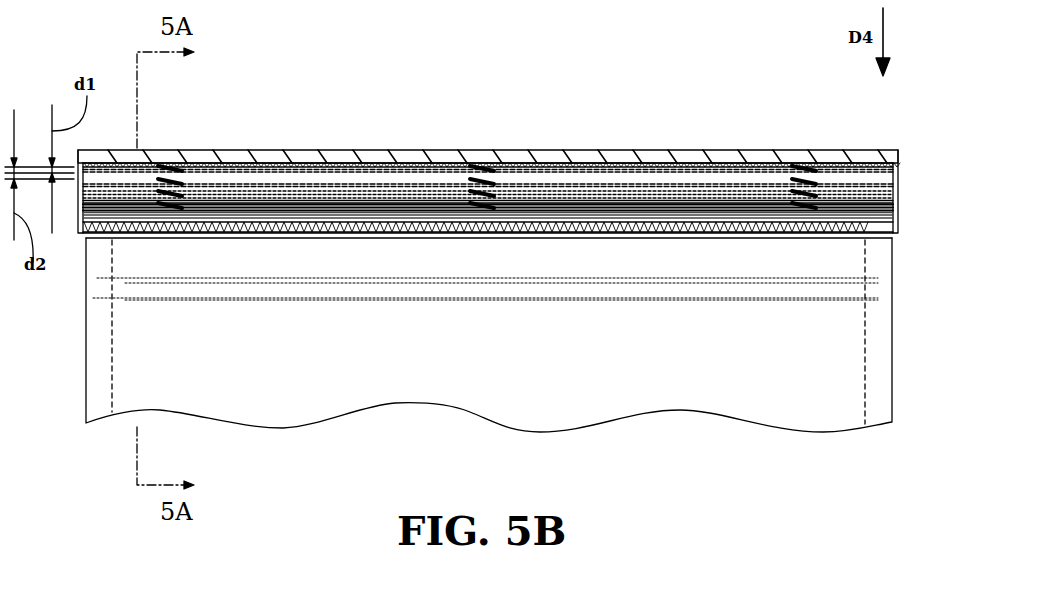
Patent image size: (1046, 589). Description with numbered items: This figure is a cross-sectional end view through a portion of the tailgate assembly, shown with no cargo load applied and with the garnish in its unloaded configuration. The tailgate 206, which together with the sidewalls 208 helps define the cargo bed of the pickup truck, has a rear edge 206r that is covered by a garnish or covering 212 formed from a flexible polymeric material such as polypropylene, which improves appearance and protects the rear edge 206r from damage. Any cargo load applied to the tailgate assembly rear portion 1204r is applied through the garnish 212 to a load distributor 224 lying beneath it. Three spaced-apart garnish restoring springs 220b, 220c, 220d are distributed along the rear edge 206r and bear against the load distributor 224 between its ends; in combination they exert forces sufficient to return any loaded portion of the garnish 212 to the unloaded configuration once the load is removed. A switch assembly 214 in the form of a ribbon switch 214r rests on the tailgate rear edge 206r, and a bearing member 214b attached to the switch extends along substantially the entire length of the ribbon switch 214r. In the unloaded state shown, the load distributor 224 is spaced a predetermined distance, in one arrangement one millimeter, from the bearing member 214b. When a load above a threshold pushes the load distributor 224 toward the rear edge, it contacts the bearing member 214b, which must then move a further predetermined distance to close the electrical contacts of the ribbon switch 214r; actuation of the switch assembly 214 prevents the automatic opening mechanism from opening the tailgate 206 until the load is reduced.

The tailgate 206 is at (372, 392).
The tailgate rear edge 206r is at (295, 212).
The sidewalls 208 is at (93, 318).
The garnish 212 is at (247, 150).
The switch assembly 214 is at (613, 213).
The bearing member 214b is at (440, 186).
The ribbon switch 214r is at (643, 200).
The spring 220b is at (178, 195).
The spring 220c is at (488, 205).
The spring 220d is at (803, 208).
The load distributor 224 is at (559, 169).
The cover layer recess 1204r is at (618, 140).